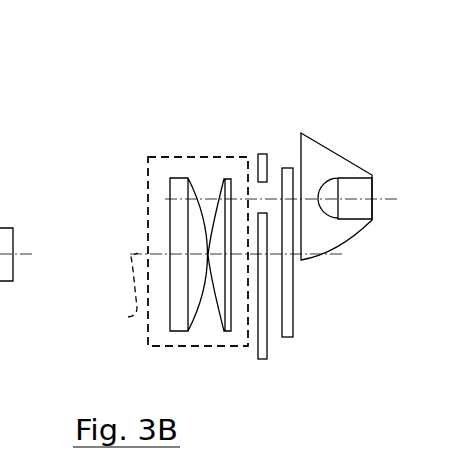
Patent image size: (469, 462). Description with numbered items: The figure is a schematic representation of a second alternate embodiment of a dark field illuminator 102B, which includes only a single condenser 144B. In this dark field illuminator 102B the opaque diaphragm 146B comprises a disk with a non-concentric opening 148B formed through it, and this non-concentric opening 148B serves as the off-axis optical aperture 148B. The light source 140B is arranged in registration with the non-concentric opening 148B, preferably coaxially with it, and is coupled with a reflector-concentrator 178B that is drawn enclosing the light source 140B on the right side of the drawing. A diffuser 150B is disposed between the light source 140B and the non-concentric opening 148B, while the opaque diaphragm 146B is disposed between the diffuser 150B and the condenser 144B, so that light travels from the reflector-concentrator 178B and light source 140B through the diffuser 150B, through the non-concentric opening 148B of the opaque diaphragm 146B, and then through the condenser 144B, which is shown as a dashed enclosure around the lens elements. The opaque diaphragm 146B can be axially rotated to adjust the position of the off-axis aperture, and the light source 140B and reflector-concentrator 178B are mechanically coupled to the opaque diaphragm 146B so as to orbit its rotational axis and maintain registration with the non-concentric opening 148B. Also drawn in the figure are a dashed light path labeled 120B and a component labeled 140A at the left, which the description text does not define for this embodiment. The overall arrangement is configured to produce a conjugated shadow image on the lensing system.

The dark field illuminator 102B is at (124, 74).
The light beam 120B is at (128, 317).
The light source 140A is at (29, 219).
The light source 140B is at (358, 178).
The condenser 144B is at (175, 157).
The opaque diaphragm 146B is at (258, 153).
The non-concentric opening 148B is at (261, 197).
The diffuser 150B is at (294, 273).
The reflector-concentrator 178B is at (325, 145).